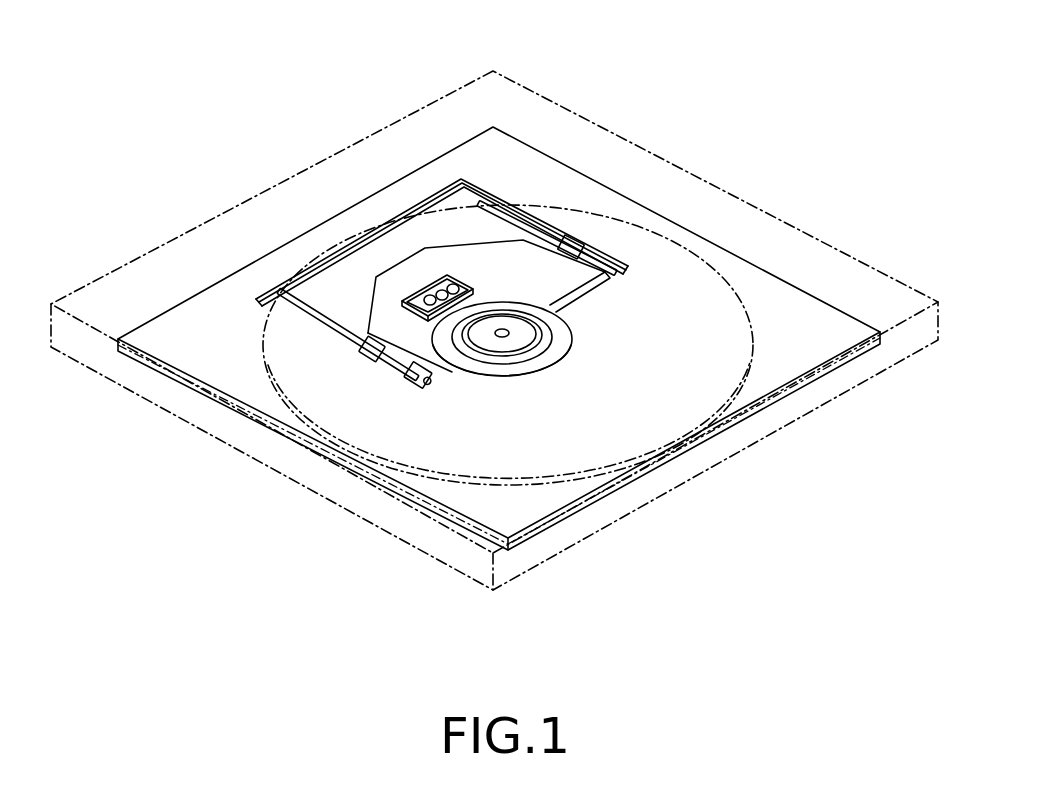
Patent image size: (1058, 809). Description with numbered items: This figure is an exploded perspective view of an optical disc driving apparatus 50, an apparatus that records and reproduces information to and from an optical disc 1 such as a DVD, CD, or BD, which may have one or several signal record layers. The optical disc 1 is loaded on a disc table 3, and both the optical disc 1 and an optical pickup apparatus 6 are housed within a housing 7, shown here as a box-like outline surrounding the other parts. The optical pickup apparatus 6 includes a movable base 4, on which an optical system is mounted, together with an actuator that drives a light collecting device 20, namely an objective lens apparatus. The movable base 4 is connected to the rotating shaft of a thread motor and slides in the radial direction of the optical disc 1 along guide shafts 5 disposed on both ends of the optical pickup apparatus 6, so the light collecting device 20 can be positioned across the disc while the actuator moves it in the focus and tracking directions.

The optical disc 1 is at (722, 273).
The disc table 3 is at (552, 326).
The movable base 4 is at (547, 268).
The guide shafts 5 is at (300, 303).
The optical pickup apparatus 6 is at (527, 260).
The housing 7 is at (503, 78).
The light collecting device 20 is at (421, 287).
The optical disc driving apparatus 50 is at (768, 84).